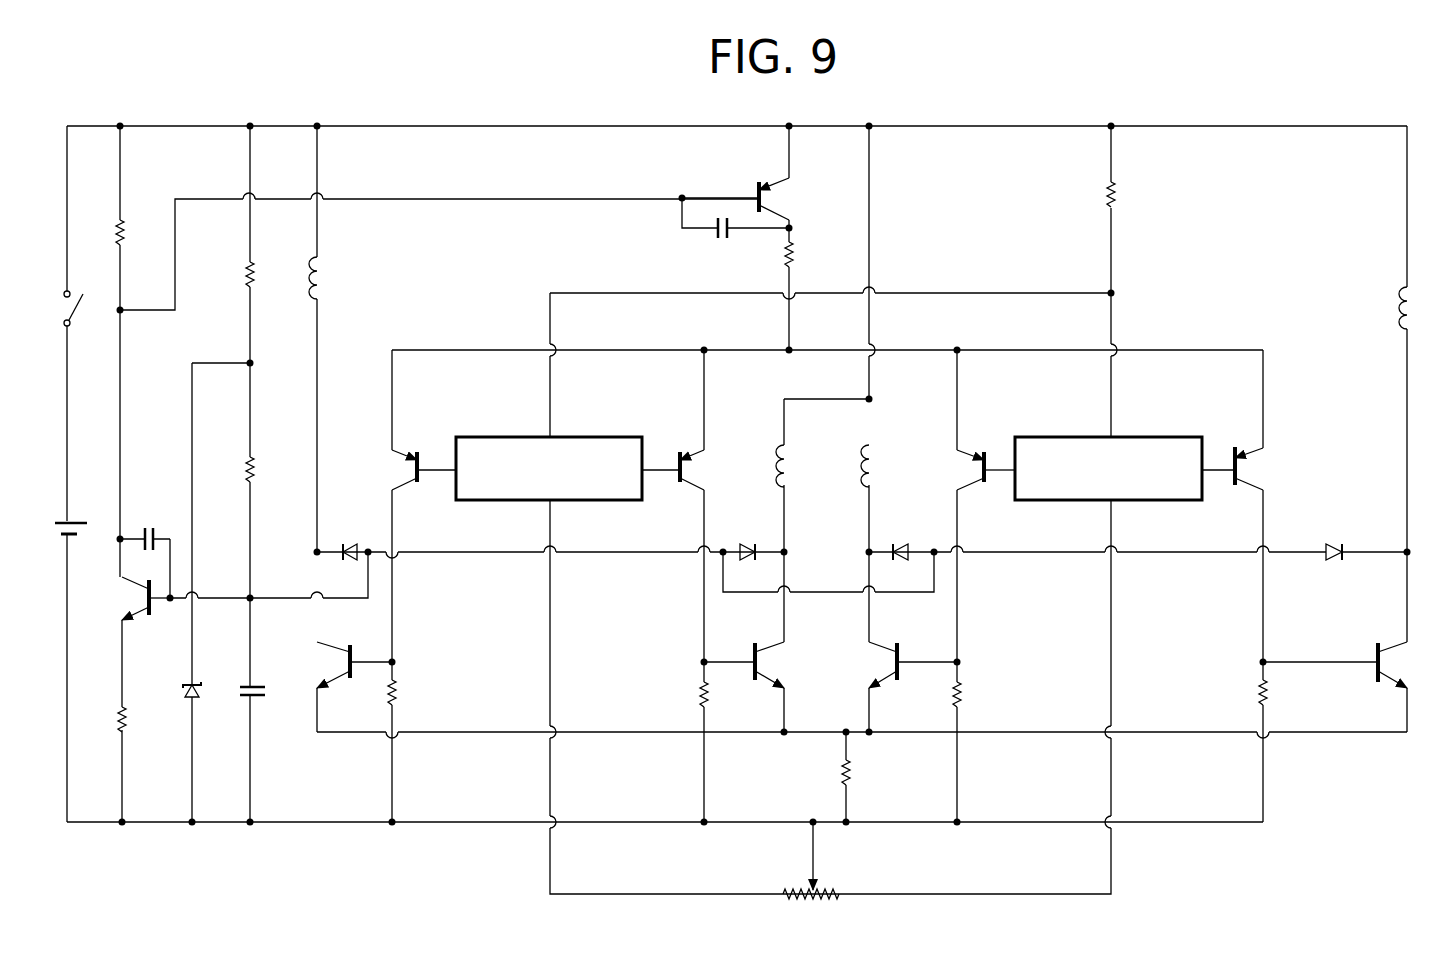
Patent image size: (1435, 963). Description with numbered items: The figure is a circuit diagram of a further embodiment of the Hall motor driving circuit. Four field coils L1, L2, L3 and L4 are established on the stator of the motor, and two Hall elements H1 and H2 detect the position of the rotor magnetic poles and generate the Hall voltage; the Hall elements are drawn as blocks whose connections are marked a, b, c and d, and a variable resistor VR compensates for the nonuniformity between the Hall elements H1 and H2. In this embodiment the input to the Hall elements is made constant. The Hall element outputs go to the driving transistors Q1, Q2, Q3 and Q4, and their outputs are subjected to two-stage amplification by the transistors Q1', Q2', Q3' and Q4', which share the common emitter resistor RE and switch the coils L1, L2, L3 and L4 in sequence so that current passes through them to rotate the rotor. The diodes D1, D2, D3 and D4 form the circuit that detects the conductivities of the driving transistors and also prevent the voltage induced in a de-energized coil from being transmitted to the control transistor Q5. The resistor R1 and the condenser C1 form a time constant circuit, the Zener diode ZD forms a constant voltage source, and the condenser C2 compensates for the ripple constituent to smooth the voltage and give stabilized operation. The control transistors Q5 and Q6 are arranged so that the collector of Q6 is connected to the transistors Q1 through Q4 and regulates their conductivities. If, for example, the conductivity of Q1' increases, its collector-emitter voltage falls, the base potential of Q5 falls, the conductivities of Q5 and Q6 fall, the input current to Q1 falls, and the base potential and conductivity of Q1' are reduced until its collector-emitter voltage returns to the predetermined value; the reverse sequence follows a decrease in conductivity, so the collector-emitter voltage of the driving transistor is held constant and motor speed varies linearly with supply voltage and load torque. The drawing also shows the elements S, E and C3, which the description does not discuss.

The power switch S is at (80, 320).
The battery (power source) E is at (79, 530).
The capacitor C3 is at (150, 525).
The control transistor Q5 is at (147, 600).
The resistor of time constant circuit R1 is at (261, 471).
The Zener diode ZD is at (200, 690).
The condenser of time constant circuit C1 is at (268, 692).
The driving transistor Q1' is at (332, 663).
The field coil L1 is at (330, 282).
The diode D1 is at (344, 543).
The driving transistor Q1 is at (401, 420).
The hall generator terminal a is at (430, 482).
The hall generator terminal b is at (669, 482).
The hall generator terminal c is at (996, 480).
The hall generator terminal d is at (1224, 482).
The Hall element H1 is at (594, 437).
The driving transistor Q2 is at (698, 420).
The control transistor Q6 is at (770, 195).
The condenser C2 is at (722, 240).
The field coil L2 is at (795, 458).
The field coil L3 is at (860, 478).
The diode D2 is at (752, 543).
The diode D3 is at (900, 543).
The driving transistor Q3 is at (964, 420).
The Hall element H2 is at (1168, 437).
The driving transistor Q4 is at (1261, 506).
The diode D4 is at (1333, 543).
The field coil L4 is at (1398, 308).
The driving transistor Q4' is at (1335, 644).
The driving transistor Q2' is at (776, 663).
The driving transistor Q3' is at (884, 669).
The emitter resistor RE is at (843, 777).
The variable resistor VR is at (826, 886).